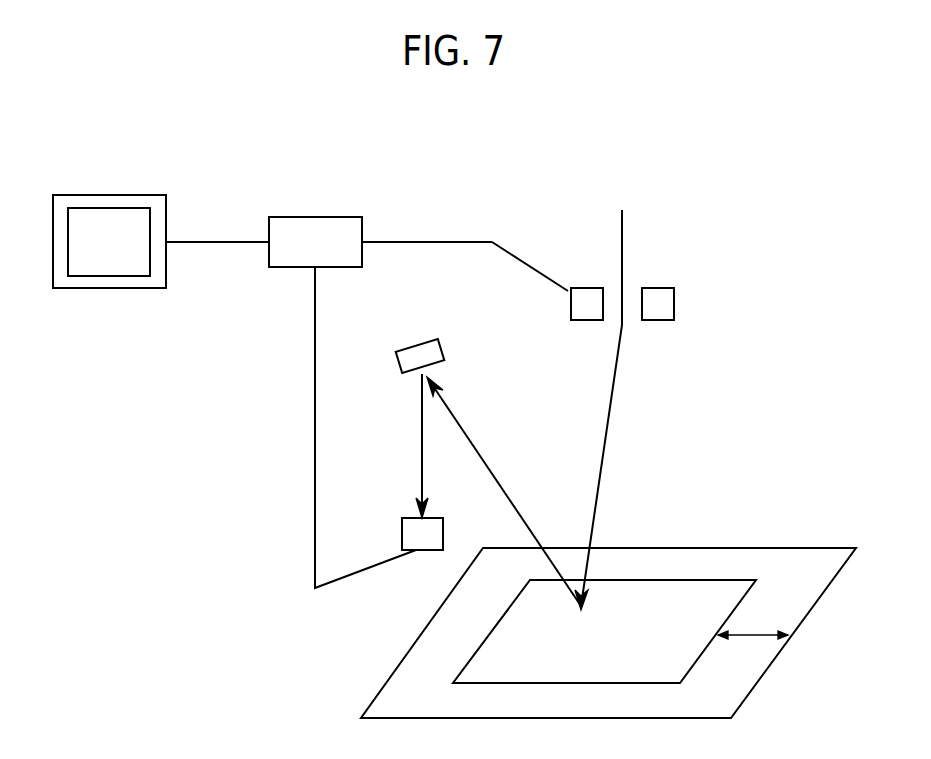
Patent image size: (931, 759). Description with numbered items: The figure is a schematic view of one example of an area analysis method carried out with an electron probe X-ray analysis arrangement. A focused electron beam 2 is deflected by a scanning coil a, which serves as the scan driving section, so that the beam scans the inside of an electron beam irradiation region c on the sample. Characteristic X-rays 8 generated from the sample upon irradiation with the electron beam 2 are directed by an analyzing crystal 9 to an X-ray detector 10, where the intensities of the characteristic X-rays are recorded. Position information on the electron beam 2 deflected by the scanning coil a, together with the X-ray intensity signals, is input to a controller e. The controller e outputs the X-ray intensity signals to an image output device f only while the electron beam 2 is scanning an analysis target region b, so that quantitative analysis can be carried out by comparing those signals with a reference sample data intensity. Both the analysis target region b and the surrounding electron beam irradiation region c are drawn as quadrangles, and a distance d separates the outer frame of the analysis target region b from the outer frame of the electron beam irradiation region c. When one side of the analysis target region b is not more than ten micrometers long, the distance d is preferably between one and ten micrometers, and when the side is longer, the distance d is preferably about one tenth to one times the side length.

The image output device f is at (108, 195).
The controller e is at (311, 217).
The scanning coil a is at (586, 288).
The electron beam 2 is at (606, 455).
The analyzing crystal 9 is at (417, 346).
The characteristic X-rays 8 is at (421, 443).
The X-ray detector 10 is at (402, 533).
The analysis target region b is at (696, 604).
The electron beam irradiation region c is at (776, 602).
The distance d is at (753, 625).